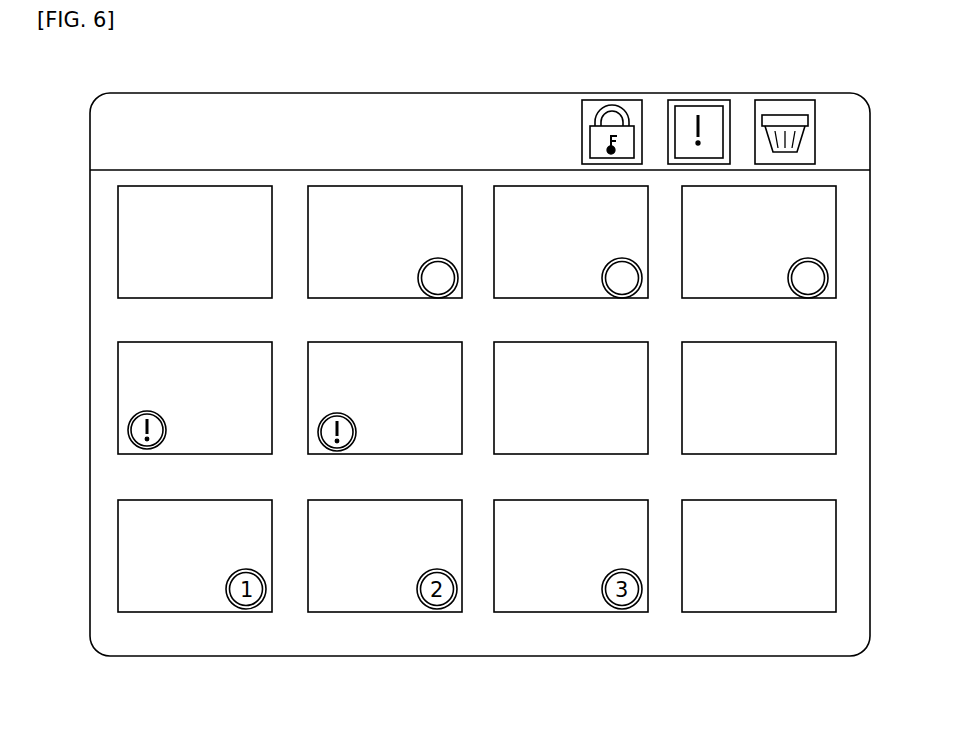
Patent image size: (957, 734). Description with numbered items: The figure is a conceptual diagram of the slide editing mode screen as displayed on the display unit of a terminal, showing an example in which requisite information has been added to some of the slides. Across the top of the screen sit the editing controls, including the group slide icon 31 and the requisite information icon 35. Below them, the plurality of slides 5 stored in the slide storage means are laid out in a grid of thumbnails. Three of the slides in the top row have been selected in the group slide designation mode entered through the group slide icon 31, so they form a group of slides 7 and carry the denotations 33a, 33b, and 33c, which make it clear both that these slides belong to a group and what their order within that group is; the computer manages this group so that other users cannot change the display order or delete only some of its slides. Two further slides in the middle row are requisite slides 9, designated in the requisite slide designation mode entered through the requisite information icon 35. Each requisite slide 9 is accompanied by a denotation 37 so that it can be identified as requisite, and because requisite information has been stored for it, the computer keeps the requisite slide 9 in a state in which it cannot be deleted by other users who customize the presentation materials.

The slide 5 is at (250, 357).
The group of slides 7 is at (347, 292).
The requisite slide 9 is at (260, 445).
The group slide icon 31 is at (617, 100).
The denotation 33a is at (437, 292).
The denotation 33b is at (605, 292).
The denotation 33c is at (800, 292).
The requisite information icon 35 is at (703, 100).
The denotation 37 is at (137, 440).